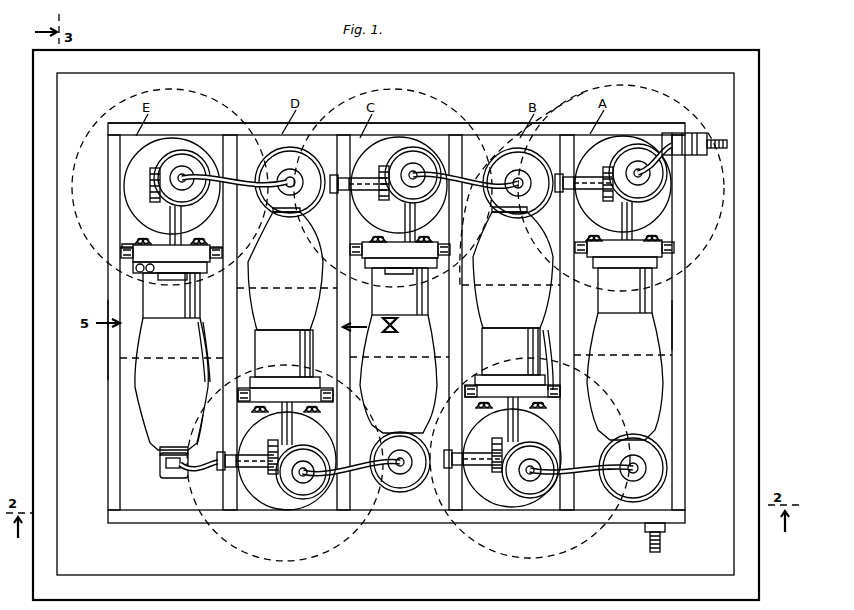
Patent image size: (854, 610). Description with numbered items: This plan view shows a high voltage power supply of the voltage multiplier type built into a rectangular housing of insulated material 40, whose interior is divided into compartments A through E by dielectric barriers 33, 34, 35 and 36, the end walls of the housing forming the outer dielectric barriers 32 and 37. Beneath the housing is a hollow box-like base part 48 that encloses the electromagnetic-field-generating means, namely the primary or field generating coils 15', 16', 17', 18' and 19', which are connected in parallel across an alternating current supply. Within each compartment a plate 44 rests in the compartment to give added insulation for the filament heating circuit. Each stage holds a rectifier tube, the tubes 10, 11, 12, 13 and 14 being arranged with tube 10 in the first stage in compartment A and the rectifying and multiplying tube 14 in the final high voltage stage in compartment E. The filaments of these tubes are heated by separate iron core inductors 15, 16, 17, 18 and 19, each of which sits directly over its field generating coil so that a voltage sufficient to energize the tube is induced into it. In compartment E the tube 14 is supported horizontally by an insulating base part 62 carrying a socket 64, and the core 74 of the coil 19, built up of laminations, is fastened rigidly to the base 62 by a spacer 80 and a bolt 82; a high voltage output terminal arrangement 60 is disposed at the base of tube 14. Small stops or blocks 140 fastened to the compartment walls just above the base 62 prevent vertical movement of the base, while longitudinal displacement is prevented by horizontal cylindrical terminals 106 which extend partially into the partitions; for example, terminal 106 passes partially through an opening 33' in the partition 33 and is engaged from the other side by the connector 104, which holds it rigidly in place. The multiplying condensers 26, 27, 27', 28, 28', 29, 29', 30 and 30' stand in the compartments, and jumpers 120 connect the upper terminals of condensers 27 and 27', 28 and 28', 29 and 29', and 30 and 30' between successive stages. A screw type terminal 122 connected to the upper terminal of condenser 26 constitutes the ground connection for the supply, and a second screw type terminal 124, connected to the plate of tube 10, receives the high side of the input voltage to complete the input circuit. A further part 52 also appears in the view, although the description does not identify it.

The rectifier tube 10 is at (652, 337).
The rectifier tube 11 is at (513, 267).
The rectifier tube 12 is at (398, 374).
The rectifier tube 13 is at (285, 269).
The rectifying and multiplying tube 14 is at (171, 386).
The filament heating coil 15 is at (623, 184).
The filament heating coil 16 is at (512, 475).
The filament heating coil 17 is at (399, 185).
The filament heating coil 18 is at (287, 461).
The iron core inductor 19 is at (148, 186).
The primary coil 15' is at (592, 186).
The primary coil 16' is at (530, 458).
The primary coil 17' is at (393, 186).
The primary coil 18' is at (285, 463).
The primary coil 19' is at (165, 187).
The condenser 26 is at (638, 148).
The condenser 27 is at (633, 486).
The condenser 27' is at (525, 490).
The condenser 28 is at (518, 158).
The condenser 28' is at (410, 151).
The condenser 29 is at (400, 489).
The condenser 29' is at (299, 492).
The condenser 30 is at (281, 182).
The condenser 30' is at (144, 178).
The dielectric barrier 32 is at (118, 338).
The dielectric barrier 33 is at (196, 352).
The opening 33' is at (181, 426).
The dielectric barrier 34 is at (356, 347).
The dielectric barrier 35 is at (462, 317).
The dielectric barrier 36 is at (576, 337).
The dielectric barrier 37 is at (710, 317).
The housing 40 is at (692, 384).
The plate 44 is at (128, 294).
The box-like base part 48 is at (766, 277).
The top cross rail 52 is at (150, 118).
The high voltage output terminal arrangement 60 is at (126, 268).
The base part 62 is at (617, 258).
The socket 64 is at (384, 270).
The core 74 is at (149, 190).
The spacer 80 is at (179, 225).
The bolt 82 is at (170, 276).
The connector 104 is at (196, 478).
The terminal 106 is at (260, 502).
The jumper 120 is at (248, 176).
The screw type terminal 122 is at (706, 134).
The screw type terminal 124 is at (664, 538).
The stop block 140 is at (126, 253).